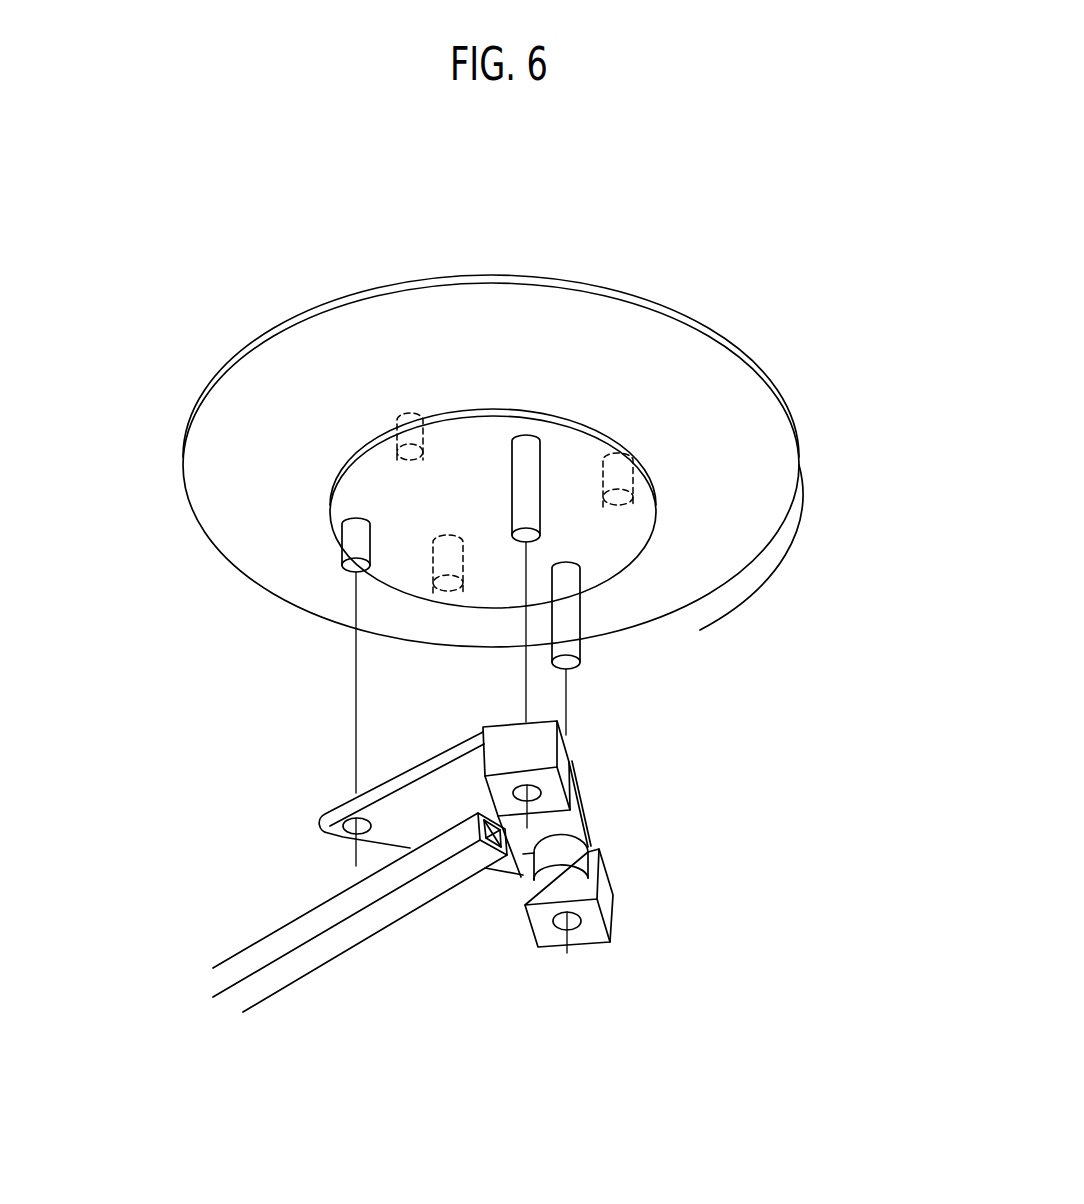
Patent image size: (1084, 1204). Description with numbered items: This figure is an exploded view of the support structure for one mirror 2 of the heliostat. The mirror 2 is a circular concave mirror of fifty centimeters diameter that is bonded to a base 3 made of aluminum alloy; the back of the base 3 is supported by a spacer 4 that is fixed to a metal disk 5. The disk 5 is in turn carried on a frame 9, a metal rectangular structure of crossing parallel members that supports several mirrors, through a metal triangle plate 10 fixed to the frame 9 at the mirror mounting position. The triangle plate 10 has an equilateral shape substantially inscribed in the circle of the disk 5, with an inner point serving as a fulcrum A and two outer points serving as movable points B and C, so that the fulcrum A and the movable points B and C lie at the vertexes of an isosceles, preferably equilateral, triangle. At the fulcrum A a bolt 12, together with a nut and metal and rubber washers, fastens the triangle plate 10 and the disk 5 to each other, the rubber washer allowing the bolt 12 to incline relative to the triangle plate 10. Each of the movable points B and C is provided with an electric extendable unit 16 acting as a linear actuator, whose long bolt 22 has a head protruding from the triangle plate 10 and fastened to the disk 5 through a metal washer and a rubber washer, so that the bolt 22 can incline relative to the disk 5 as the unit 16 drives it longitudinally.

The mirror 2 is at (512, 273).
The base 3 is at (757, 540).
The spacer 4 is at (407, 413).
The disk 5 is at (345, 490).
The frame 9 is at (353, 948).
The triangle plate 10 is at (437, 777).
The bolt 12 is at (350, 542).
The electric extendable unit 16 is at (566, 753).
The long bolt 22 is at (500, 437).
The fulcrum A is at (343, 837).
The movable point B is at (556, 795).
The movable point C is at (613, 915).